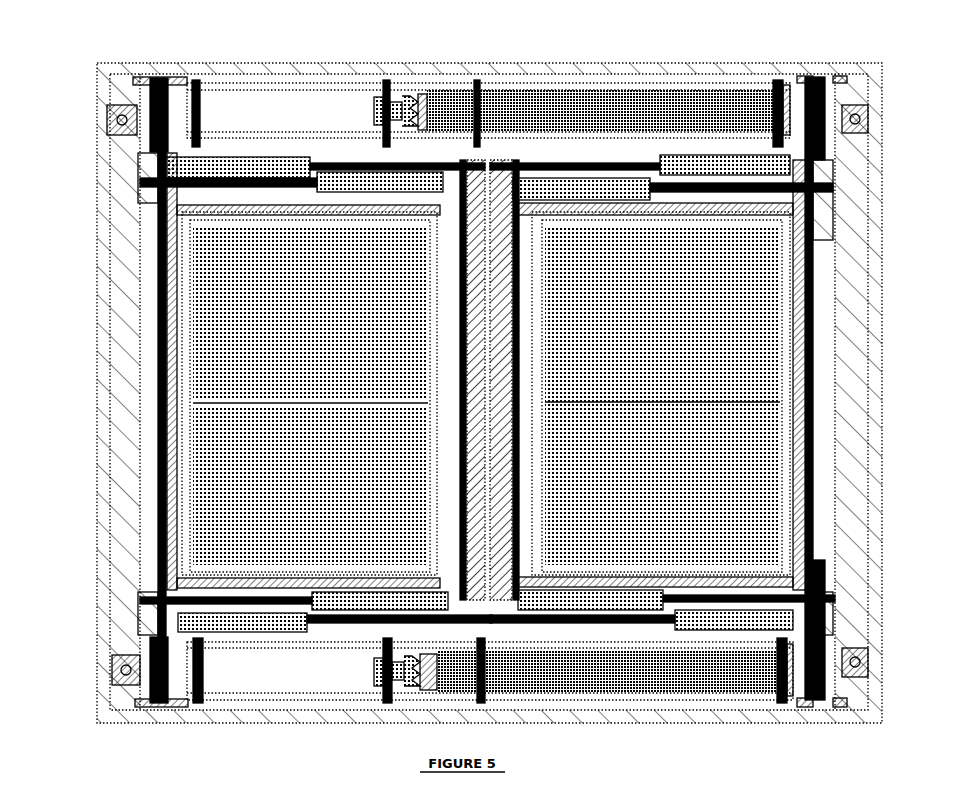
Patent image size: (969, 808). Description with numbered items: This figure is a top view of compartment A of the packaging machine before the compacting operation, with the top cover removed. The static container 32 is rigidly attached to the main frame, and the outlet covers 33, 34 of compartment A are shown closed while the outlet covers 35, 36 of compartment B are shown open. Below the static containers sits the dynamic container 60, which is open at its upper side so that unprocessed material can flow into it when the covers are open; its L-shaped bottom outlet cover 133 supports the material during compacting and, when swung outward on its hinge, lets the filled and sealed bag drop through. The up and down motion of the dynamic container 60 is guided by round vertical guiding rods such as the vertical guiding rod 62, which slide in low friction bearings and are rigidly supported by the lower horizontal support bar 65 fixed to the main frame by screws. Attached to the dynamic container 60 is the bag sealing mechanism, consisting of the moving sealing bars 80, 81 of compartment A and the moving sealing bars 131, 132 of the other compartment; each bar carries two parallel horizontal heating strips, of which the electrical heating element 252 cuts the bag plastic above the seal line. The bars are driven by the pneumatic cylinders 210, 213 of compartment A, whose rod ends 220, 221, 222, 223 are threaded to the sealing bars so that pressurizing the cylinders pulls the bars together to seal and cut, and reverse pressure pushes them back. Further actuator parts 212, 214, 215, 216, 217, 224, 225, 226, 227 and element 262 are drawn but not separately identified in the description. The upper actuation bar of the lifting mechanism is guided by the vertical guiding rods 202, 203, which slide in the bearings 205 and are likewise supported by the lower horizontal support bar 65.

The static container 32 is at (813, 277).
The outlet cover 33 is at (215, 527).
The outlet cover 34 is at (215, 335).
The outlet cover 35 is at (755, 473).
The outlet cover 36 is at (770, 300).
The dynamic container 60 is at (160, 432).
The vertical guiding rod 62 is at (790, 535).
The lower horizontal support bar 65 is at (833, 650).
The moving sealing bar 80 is at (153, 367).
The moving sealing bar 81 is at (465, 162).
The moving sealing bar 131 is at (535, 352).
The moving sealing bar 132 is at (790, 345).
The bottom outlet cover 133 is at (163, 270).
The vertical guiding rod 202 is at (112, 668).
The vertical guiding rod 203 is at (852, 680).
The bearings 205 is at (135, 702).
The pneumatic cylinder 210 is at (423, 163).
The lower slide block 212 is at (377, 598).
The pneumatic cylinder 213 is at (203, 655).
The upper slide block 214 is at (597, 187).
The upper slide block 215 is at (755, 155).
The lower slide block 216 is at (608, 600).
The lower slide block 217 is at (720, 622).
The rod end 220 is at (383, 193).
The rod end 221 is at (165, 185).
The rod end 222 is at (330, 623).
The rod end 223 is at (230, 603).
The upper guide rod 224 is at (632, 160).
The upper guide rod 225 is at (713, 185).
The lower guide rod 226 is at (637, 620).
The lower guide rod 227 is at (688, 603).
The electrical heating element 252 is at (460, 406).
The second panel lower region 262 is at (535, 417).